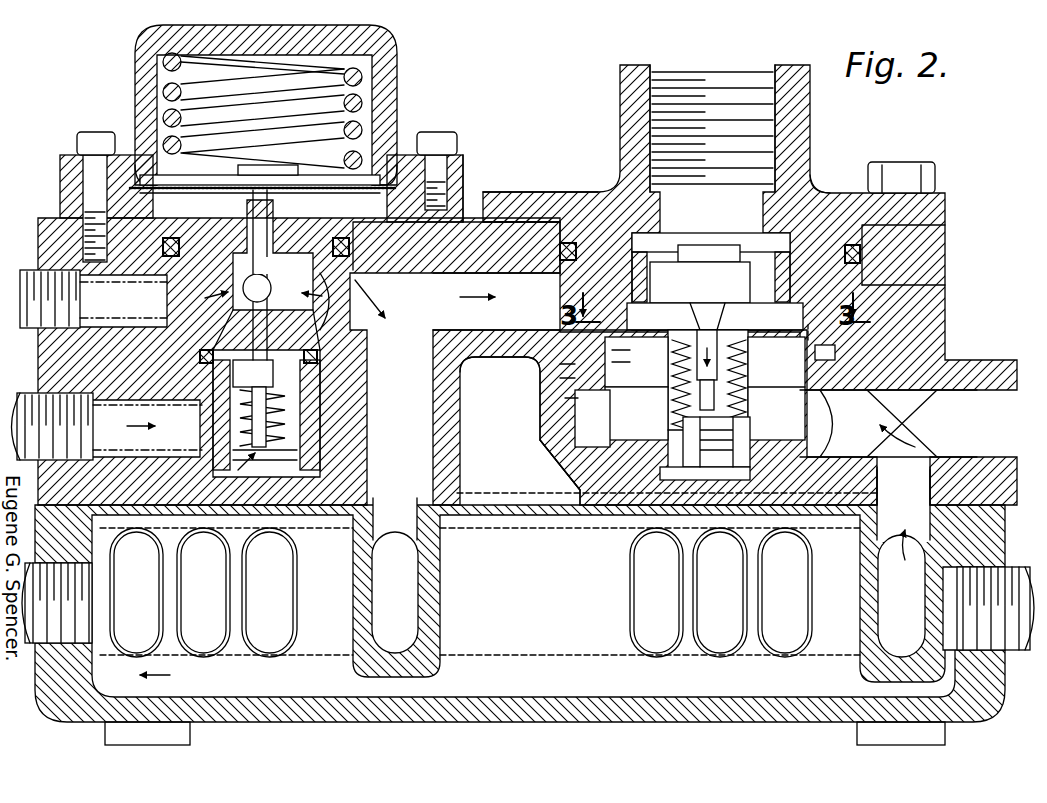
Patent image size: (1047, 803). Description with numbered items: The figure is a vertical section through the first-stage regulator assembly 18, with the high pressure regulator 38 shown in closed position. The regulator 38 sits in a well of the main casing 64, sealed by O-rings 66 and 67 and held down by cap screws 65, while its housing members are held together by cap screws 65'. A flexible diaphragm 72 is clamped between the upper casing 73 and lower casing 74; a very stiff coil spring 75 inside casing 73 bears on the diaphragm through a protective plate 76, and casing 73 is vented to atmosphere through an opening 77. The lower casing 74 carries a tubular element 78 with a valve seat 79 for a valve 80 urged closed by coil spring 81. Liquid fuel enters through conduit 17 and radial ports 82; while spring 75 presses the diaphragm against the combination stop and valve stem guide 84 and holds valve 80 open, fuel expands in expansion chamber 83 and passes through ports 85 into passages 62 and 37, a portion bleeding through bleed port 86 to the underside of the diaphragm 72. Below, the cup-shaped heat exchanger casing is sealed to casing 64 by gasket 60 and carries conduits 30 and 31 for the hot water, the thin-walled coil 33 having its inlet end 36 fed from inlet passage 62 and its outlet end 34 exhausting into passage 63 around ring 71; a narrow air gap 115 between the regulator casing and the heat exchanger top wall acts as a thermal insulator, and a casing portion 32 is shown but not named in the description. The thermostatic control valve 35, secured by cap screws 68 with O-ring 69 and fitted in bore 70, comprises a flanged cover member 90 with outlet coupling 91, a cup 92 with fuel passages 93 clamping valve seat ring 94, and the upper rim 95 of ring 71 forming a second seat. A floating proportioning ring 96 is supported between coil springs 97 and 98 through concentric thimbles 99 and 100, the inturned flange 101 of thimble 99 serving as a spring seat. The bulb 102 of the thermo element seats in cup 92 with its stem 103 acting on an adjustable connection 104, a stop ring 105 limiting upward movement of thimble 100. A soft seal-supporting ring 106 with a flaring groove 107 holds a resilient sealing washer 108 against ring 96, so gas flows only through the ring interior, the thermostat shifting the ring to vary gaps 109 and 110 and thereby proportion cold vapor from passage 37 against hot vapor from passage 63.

The conduit 17 is at (20, 398).
The first-stage regulator assembly 18 is at (537, 122).
The conduit 30 is at (35, 668).
The conduit 31 is at (993, 680).
The bottom wall 32 is at (478, 722).
The coil 33 is at (550, 657).
The outlet end 34 is at (914, 500).
The automatic temperature control unit 35 is at (813, 178).
The inlet end 36 is at (412, 496).
The passage 37 is at (467, 323).
The high pressure regulator 38 is at (130, 92).
The gasket 60 is at (935, 516).
The inlet passage 62 is at (408, 428).
The passage 63 is at (925, 468).
The main casing 64 is at (500, 236).
The cap screws 65 is at (90, 194).
The cap screws 65' is at (440, 156).
The sealing O-ring 66 is at (158, 268).
The sealing O-ring 67 is at (218, 335).
The cap screws 68 is at (936, 180).
The sealing O-ring 69 is at (862, 248).
The bore 70 is at (880, 283).
The ring 71 is at (804, 415).
The flexible diaphragm 72 is at (403, 162).
The upper casing 73 is at (465, 167).
The lower casing 74 is at (470, 197).
The coil spring 75 is at (392, 88).
The protective plate 76 is at (396, 132).
The opening 77 is at (140, 138).
The tubular element 78 is at (305, 322).
The valve seat 79 is at (340, 360).
The valve 80 is at (330, 378).
The coil spring 81 is at (305, 442).
The radial ports 82 is at (213, 425).
The expansion chamber 83 is at (267, 275).
The combination stop and valve stem guide 84 is at (230, 207).
The ports 85 is at (263, 294).
The bleed port 86 is at (330, 205).
The flanged cover member 90 is at (602, 203).
The outlet coupling 91 is at (626, 100).
The cup 92 is at (645, 305).
The fuel passages 93 is at (655, 250).
The valve seat ring 94 is at (819, 322).
The upper rim 95 is at (592, 418).
The floating proportioning ring 96 is at (608, 355).
The coil spring 97 is at (760, 372).
The coil spring 98 is at (608, 375).
The thimble 99 is at (748, 340).
The thimble 100 is at (730, 340).
The inturned flange 101 is at (745, 458).
The bulb 102 is at (709, 253).
The stem 103 is at (715, 290).
The adjustable connection 104 is at (700, 470).
The stop ring 105 is at (600, 450).
The seal-supporting ring 106 is at (560, 380).
The flaring groove 107 is at (560, 368).
The resilient sealing washer 108 is at (565, 402).
The gap 109 is at (855, 352).
The gap 110 is at (860, 405).
The air gap 115 is at (518, 460).